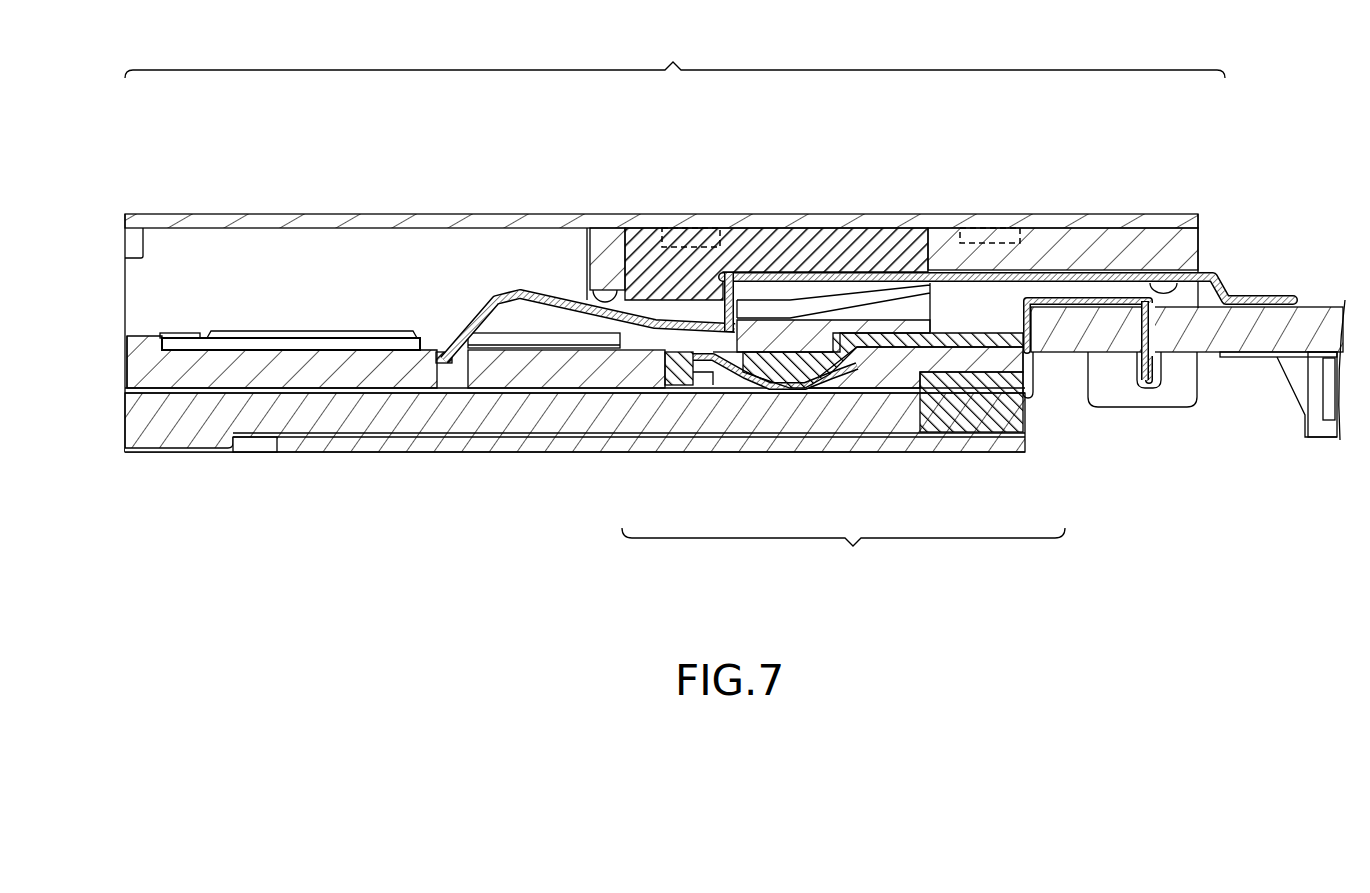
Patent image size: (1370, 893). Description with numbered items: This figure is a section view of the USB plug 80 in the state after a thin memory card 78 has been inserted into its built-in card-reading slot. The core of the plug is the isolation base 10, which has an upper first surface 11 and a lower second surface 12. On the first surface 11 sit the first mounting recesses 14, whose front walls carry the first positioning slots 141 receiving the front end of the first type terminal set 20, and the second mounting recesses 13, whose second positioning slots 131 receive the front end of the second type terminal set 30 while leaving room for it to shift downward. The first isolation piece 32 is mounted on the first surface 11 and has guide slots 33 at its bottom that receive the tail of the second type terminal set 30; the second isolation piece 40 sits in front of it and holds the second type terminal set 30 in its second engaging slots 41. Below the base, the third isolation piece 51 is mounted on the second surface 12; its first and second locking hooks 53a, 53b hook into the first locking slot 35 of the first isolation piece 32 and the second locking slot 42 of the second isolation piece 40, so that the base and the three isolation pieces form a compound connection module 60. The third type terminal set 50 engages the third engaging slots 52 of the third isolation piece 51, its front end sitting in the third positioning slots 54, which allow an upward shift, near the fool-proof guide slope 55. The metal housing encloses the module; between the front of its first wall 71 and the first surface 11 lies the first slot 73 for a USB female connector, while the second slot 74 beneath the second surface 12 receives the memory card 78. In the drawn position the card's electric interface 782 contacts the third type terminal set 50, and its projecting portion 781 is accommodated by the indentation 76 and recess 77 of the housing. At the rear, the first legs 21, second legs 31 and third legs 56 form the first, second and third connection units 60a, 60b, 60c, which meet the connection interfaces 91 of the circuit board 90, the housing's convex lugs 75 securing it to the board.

The USB plug 80 is at (675, 55).
The first wall 71 is at (100, 256).
The first slot 73 is at (332, 295).
The isolation base 10 is at (346, 370).
The first surface 11 is at (156, 326).
The first mounting recesses 14 is at (265, 332).
The first positioning slots 141 is at (197, 333).
The first type terminal set 20 is at (440, 348).
The second positioning slots 131 is at (478, 340).
The second mounting recesses 13 is at (533, 340).
The second engaging slots 41 is at (618, 285).
The second isolation piece 40 is at (760, 262).
The second locking hook 53b is at (688, 198).
The second locking slot 42 is at (690, 226).
The second type terminal set 30 is at (880, 262).
The first locking hook 53a is at (974, 201).
The first locking slot 35 is at (972, 226).
The first isolation piece 32 is at (1097, 262).
The guide slots 33 is at (1160, 262).
The second connection unit 60b is at (817, 236).
The first legs 21 is at (1220, 270).
The second legs 31 is at (1247, 300).
The first connection unit 60a is at (1044, 238).
The compound connection module 60 is at (1210, 176).
The third type terminal set 50 is at (893, 362).
The electric interface 782 is at (800, 398).
The third engaging slots 52 is at (833, 362).
The third positioning slots 54 is at (703, 382).
The fool-proof guide slope 55 is at (676, 428).
The third isolation piece 51 is at (990, 400).
The second surface 12 is at (311, 405).
The recess 77 is at (262, 450).
The memory card 78 is at (405, 438).
The second slot 74 is at (492, 426).
The indentation 76 is at (200, 454).
The projecting portion 781 is at (152, 452).
The third legs 56 is at (1060, 308).
The circuit board 90 is at (1258, 348).
The convex lugs 75 is at (1168, 402).
The connection interfaces 91 is at (1300, 352).
The third connection unit 60c is at (843, 551).